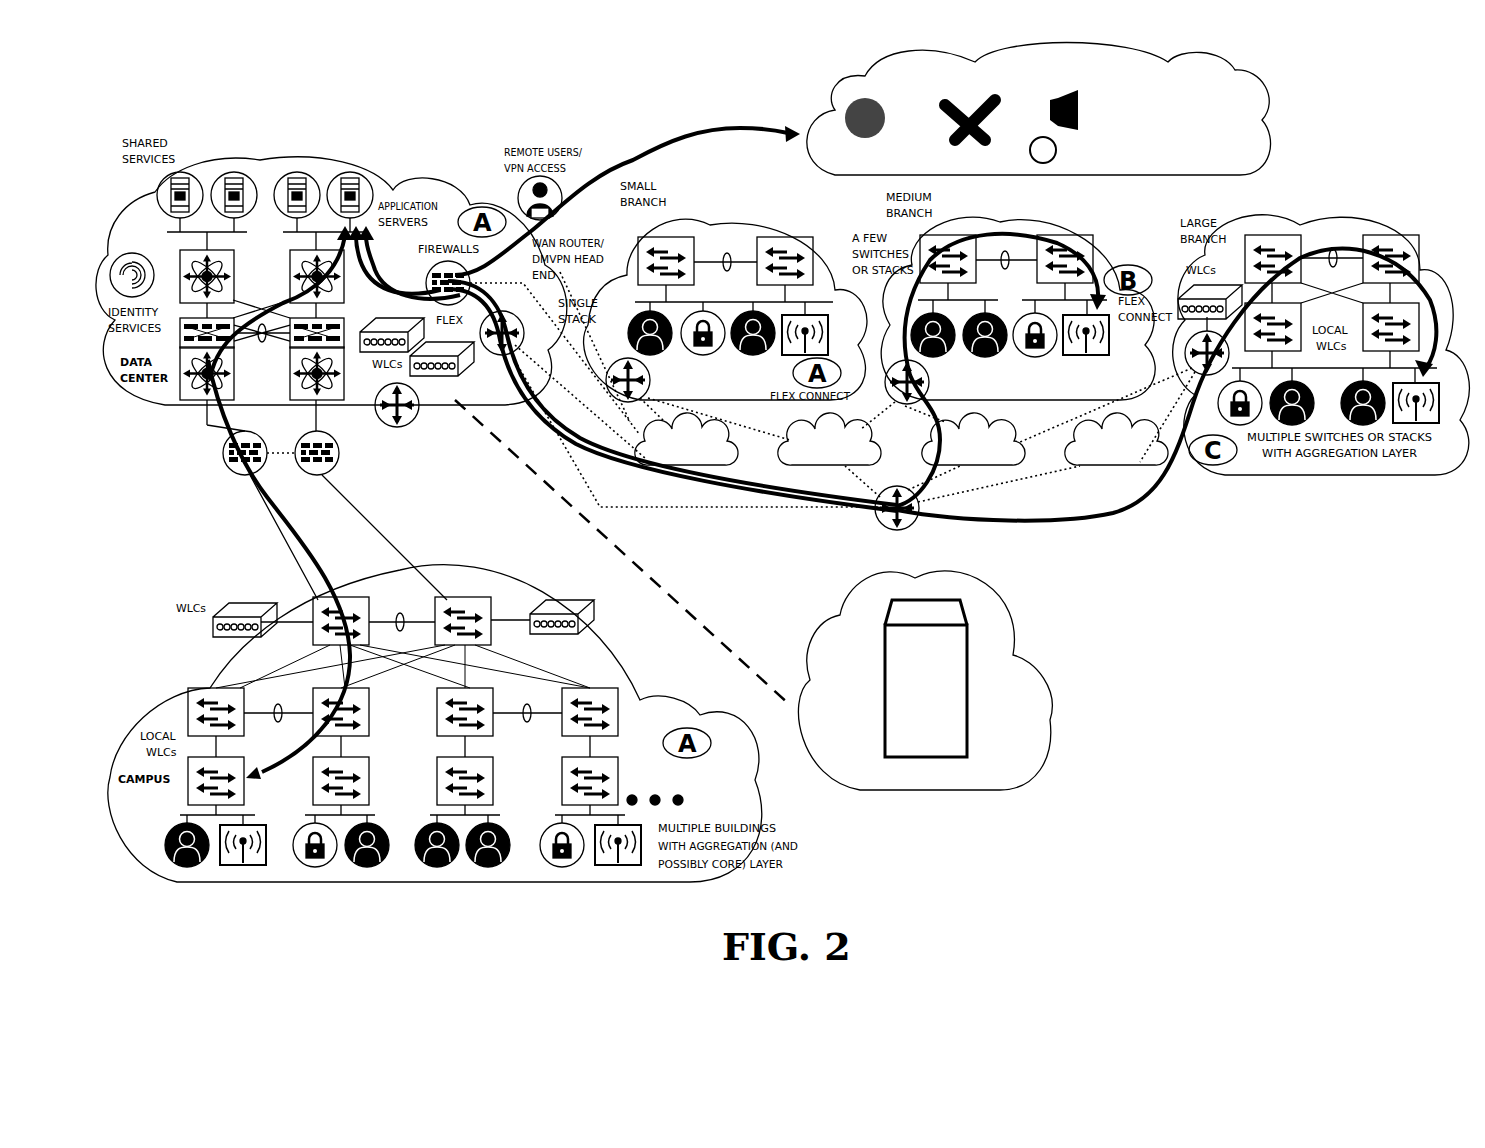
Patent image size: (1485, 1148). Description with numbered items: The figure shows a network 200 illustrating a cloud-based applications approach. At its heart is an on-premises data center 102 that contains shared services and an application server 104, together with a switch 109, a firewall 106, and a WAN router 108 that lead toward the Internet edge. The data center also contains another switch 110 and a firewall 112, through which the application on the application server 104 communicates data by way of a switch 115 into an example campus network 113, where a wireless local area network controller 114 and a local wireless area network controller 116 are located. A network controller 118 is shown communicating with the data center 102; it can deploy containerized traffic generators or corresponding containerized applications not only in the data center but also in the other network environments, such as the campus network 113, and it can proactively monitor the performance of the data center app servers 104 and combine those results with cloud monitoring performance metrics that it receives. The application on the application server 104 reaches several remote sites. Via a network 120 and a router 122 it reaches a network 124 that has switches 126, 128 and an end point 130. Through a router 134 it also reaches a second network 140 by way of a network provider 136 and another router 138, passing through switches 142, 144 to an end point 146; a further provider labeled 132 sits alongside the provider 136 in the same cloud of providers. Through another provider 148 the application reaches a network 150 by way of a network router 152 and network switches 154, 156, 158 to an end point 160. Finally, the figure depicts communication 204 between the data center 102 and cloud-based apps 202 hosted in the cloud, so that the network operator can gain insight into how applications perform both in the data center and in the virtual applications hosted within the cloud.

The data center 102 is at (320, 160).
The application server 104 is at (380, 183).
The firewall 106 is at (430, 275).
The WAN router 108 is at (505, 356).
The switch 109 is at (290, 275).
The switch 110 is at (180, 395).
The firewall 112 is at (225, 470).
The campus network 113 is at (515, 882).
The wireless local area network controller 114 is at (213, 632).
The switch 115 is at (313, 605).
The local wireless area network controller 116 is at (188, 797).
The network controller 118 is at (1035, 780).
The network 120 is at (690, 466).
The router 122 is at (652, 383).
The network 124 is at (730, 222).
The switch 126 is at (670, 237).
The switch 128 is at (812, 237).
The end point 130 is at (800, 356).
The provider A 132 is at (825, 466).
The router 134 is at (885, 530).
The network provider 136 is at (980, 420).
The router 138 is at (910, 405).
The second network 140 is at (1040, 227).
The switch 142 is at (945, 235).
The switch 144 is at (1093, 250).
The end point 146 is at (1092, 358).
The provider 148 is at (1128, 466).
The network 150 is at (1335, 232).
The network router 152 is at (1188, 372).
The network switch 154 is at (1262, 235).
The network switch 156 is at (1397, 235).
The network switch 158 is at (1420, 303).
The end point 160 is at (1390, 386).
The network 200 is at (1345, 158).
The cloud-based apps 202 is at (850, 75).
The communication 204 is at (762, 125).